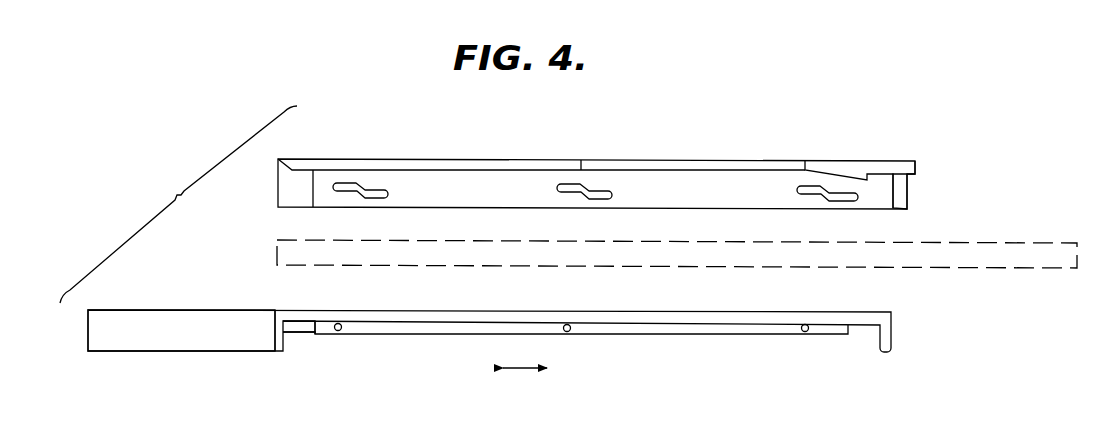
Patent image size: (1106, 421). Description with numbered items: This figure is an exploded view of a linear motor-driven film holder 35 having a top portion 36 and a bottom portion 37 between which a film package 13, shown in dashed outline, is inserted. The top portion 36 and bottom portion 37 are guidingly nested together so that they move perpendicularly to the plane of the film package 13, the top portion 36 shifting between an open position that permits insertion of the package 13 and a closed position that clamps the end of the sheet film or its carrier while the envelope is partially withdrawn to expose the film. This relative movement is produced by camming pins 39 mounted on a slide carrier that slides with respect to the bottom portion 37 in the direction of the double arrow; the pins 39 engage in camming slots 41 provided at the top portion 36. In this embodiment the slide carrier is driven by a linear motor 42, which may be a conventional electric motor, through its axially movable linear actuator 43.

The film package 13 is at (997, 240).
The film holder 35 is at (820, 145).
The top portion 36 is at (918, 182).
The bottom portion 37 is at (516, 324).
The camming pins 39 is at (338, 331).
The camming slots 41 is at (341, 182).
The linear motor 42 is at (180, 310).
The linear actuator 43 is at (302, 334).